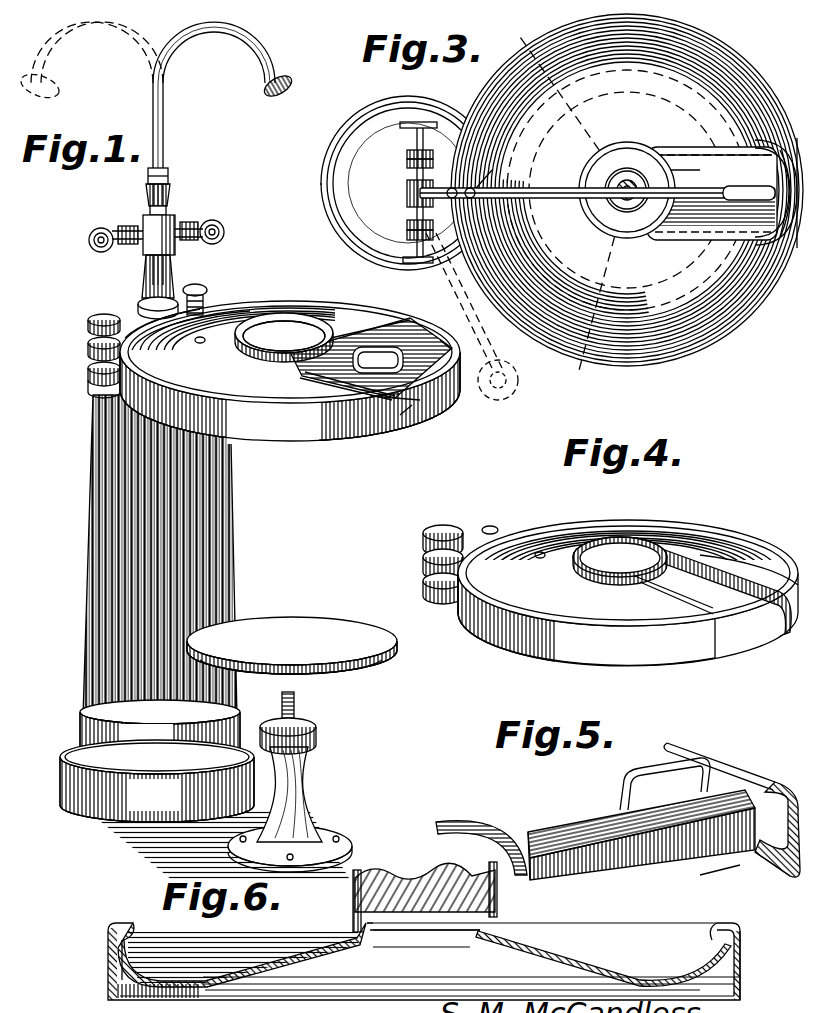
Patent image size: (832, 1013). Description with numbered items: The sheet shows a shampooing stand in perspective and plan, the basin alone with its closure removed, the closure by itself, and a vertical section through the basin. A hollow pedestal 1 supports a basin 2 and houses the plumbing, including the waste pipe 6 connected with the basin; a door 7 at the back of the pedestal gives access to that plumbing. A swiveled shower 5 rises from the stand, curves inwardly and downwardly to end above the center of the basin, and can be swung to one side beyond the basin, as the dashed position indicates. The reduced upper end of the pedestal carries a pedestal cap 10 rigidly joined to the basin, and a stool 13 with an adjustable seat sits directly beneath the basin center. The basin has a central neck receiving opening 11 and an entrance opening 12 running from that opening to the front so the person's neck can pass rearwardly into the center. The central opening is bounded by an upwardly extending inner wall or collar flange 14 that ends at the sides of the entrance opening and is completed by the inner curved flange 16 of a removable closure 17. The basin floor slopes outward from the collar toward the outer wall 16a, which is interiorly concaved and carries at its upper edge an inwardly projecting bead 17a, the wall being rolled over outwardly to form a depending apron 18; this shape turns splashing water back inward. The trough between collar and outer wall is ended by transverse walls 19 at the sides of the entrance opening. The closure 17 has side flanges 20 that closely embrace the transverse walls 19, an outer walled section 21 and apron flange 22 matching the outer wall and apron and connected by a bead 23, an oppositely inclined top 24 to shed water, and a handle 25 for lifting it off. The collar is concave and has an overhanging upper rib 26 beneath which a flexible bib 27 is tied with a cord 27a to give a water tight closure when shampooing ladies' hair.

In FIG. 1, the hollow pedestal 1 is at (226, 536).
In FIG. 3, the hollow pedestal 1 is at (322, 180).
In FIG. 1, the basin 2 is at (283, 440).
In FIG. 3, the basin 2 is at (722, 50).
In FIG. 4, the basin 2 is at (515, 645).
In FIG. 6, the basin 2 is at (106, 955).
In FIG. 1, the shower 5 is at (163, 108).
In FIG. 3, the shower 5 is at (560, 189).
In FIG. 1, the waste pipe 6 is at (200, 343).
In FIG. 3, the waste pipe 6 is at (492, 170).
In FIG. 4, the waste pipe 6 is at (540, 557).
In FIG. 1, the door 7 is at (88, 562).
In FIG. 1, the pedestal cap 10 is at (90, 323).
In FIG. 3, the pedestal cap 10 is at (408, 183).
In FIG. 4, the pedestal cap 10 is at (440, 535).
In FIG. 1, the central neck receiving opening 11 is at (281, 330).
In FIG. 3, the central neck receiving opening 11 is at (623, 186).
In FIG. 1, the entrance opening 12 is at (378, 396).
In FIG. 3, the entrance opening 12 is at (787, 254).
In FIG. 4, the entrance opening 12 is at (745, 610).
In FIG. 1, the stool 13 is at (320, 686).
In FIG. 1, the inner wall or collar flange 14 is at (262, 348).
In FIG. 4, the inner wall or collar flange 14 is at (590, 568).
In FIG. 6, the inner wall or collar flange 14 is at (425, 932).
In FIG. 1, the inner curved flange 16 is at (305, 343).
In FIG. 3, the inner curved flange 16 is at (663, 174).
In FIG. 5, the inner curved flange 16 is at (475, 820).
In FIG. 1, the outer wall 16a is at (140, 340).
In FIG. 3, the outer wall 16a is at (694, 335).
In FIG. 4, the outer wall 16a is at (745, 545).
In FIG. 6, the outer wall 16a is at (740, 945).
In FIG. 1, the removable closure 17 is at (335, 345).
In FIG. 3, the removable closure 17 is at (667, 154).
In FIG. 5, the removable closure 17 is at (545, 830).
In FIG. 1, the bead or overhanging portion 17a is at (214, 318).
In FIG. 3, the bead or overhanging portion 17a is at (630, 360).
In FIG. 4, the bead or overhanging portion 17a is at (480, 600).
In FIG. 5, the bead or overhanging portion 17a is at (716, 889).
In FIG. 6, the bead or overhanging portion 17a is at (707, 926).
In FIG. 1, the depending apron 18 is at (290, 398).
In FIG. 3, the depending apron 18 is at (740, 324).
In FIG. 4, the depending apron 18 is at (628, 619).
In FIG. 6, the depending apron 18 is at (108, 990).
In FIG. 3, the transverse walls 19 is at (660, 255).
In FIG. 4, the transverse walls 19 is at (692, 575).
In FIG. 1, the side flanges 20 is at (340, 385).
In FIG. 3, the side flanges 20 is at (680, 148).
In FIG. 5, the side flanges 20 is at (468, 832).
In FIG. 3, the walled section or flange 21 is at (750, 248).
In FIG. 5, the walled section or flange 21 is at (750, 790).
In FIG. 1, the apron flange 22 is at (405, 420).
In FIG. 5, the apron flange 22 is at (788, 858).
In FIG. 1, the bead 23 is at (408, 382).
In FIG. 3, the bead 23 is at (797, 148).
In FIG. 5, the bead 23 is at (720, 758).
In FIG. 1, the oppositely inclined portion 24 is at (370, 335).
In FIG. 3, the oppositely inclined portion 24 is at (712, 152).
In FIG. 5, the oppositely inclined portion 24 is at (585, 800).
In FIG. 1, the handle 25 is at (405, 345).
In FIG. 3, the handle 25 is at (716, 170).
In FIG. 5, the handle 25 is at (672, 770).
In FIG. 1, the upper edge or rib 26 is at (258, 318).
In FIG. 3, the upper edge or rib 26 is at (582, 212).
In FIG. 4, the upper edge or rib 26 is at (610, 538).
In FIG. 6, the upper edge or rib 26 is at (388, 878).
In FIG. 6, the flexible bib 27 is at (498, 895).
In FIG. 6, the cord 27a is at (357, 926).